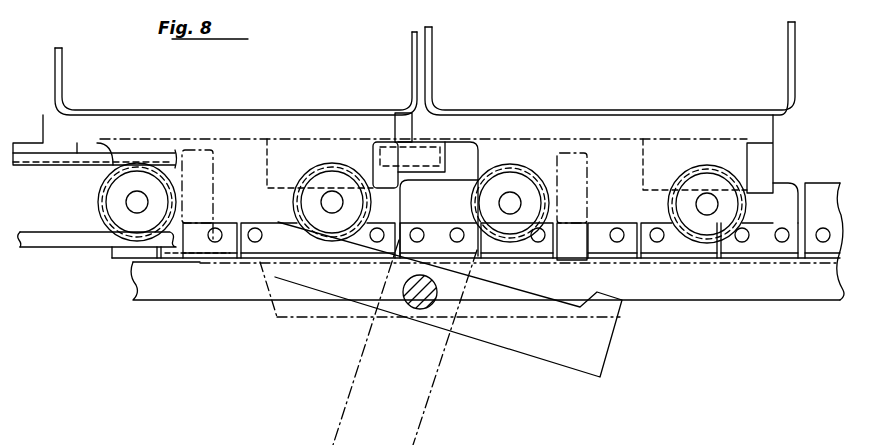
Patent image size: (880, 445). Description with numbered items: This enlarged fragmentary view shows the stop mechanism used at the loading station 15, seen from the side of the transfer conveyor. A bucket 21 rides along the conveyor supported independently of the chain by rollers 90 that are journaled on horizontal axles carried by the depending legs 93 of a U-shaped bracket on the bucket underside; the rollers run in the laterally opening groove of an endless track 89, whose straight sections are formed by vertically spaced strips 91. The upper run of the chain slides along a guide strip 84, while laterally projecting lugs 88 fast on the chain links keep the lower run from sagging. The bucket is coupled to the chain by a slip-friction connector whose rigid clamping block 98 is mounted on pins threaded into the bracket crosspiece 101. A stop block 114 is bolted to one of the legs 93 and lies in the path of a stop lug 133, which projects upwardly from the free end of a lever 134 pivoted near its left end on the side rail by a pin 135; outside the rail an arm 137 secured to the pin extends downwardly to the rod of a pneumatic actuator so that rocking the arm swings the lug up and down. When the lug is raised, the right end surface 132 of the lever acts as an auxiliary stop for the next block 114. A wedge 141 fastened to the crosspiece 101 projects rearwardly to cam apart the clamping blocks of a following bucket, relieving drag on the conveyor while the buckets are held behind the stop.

The loading station 15 is at (228, 308).
The bucket 21 is at (417, 51).
The guide strip 84 is at (750, 298).
The lug 88 is at (808, 260).
The endless track 89 is at (40, 243).
The roller 90 is at (105, 206).
The strip 91 is at (88, 167).
The depending leg 93 is at (286, 210).
The clamping block 98 is at (394, 173).
The crosspiece 101 is at (87, 125).
The stop block 114 is at (582, 262).
The right end surface 132 is at (263, 254).
The stop lug 133 is at (612, 297).
The lever 134 is at (603, 353).
The pin 135 is at (420, 310).
The arm 137 is at (367, 336).
The wedge 141 is at (30, 143).